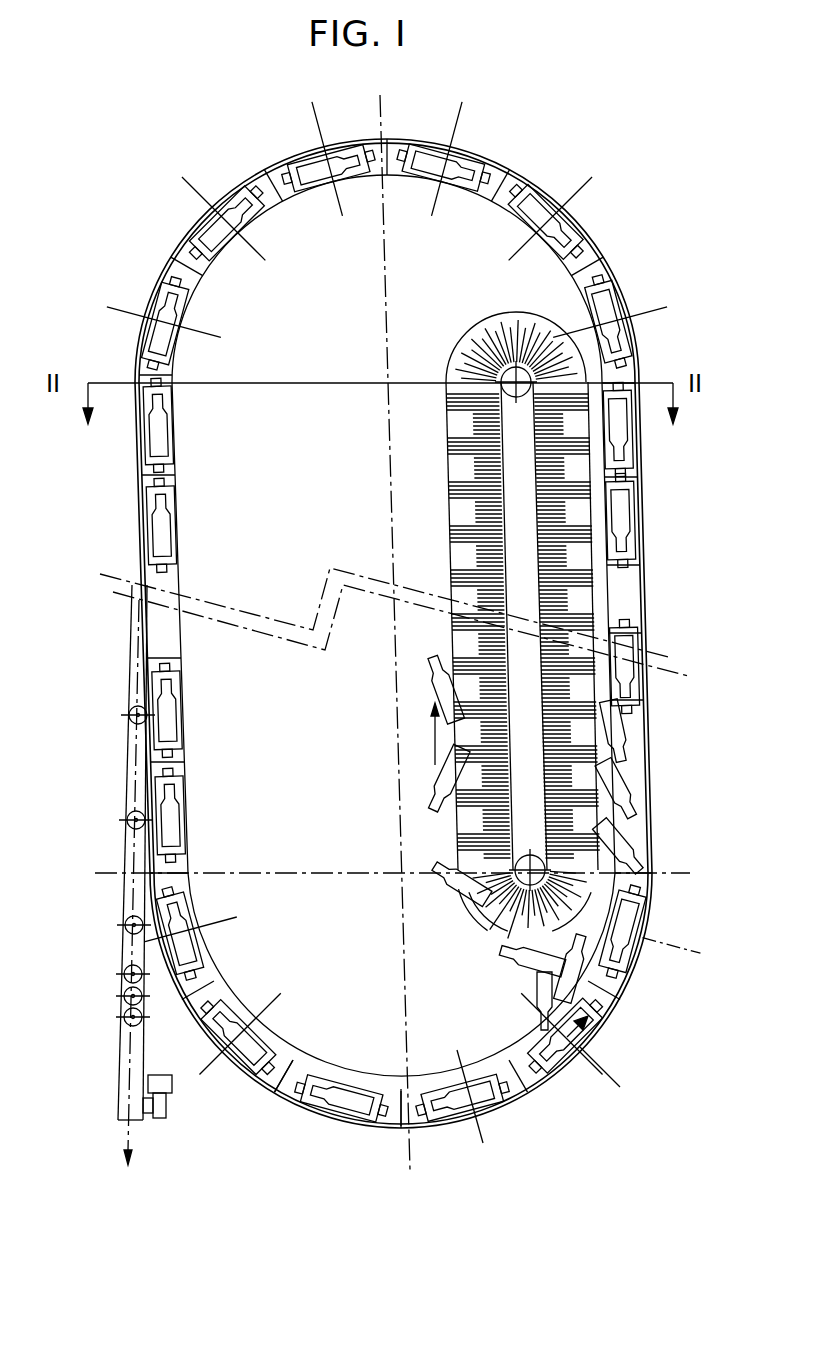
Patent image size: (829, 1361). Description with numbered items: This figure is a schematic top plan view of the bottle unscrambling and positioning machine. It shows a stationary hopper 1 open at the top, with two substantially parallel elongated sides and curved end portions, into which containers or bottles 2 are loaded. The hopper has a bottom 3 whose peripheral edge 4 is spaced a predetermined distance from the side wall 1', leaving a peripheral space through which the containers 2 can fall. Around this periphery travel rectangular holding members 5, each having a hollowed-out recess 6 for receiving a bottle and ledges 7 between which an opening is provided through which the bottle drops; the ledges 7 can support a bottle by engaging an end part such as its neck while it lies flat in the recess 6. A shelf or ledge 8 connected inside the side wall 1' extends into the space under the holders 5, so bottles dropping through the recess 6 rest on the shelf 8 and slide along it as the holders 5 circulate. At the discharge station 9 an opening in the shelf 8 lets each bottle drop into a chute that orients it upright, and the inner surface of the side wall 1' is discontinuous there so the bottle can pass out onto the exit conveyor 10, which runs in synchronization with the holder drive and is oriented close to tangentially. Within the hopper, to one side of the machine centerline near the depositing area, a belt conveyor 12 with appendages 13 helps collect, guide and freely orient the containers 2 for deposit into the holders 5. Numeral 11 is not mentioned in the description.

The hopper 1 is at (325, 291).
The side wall 1' is at (651, 520).
The containers or bottles 2 is at (458, 878).
The bottom 3 is at (300, 1027).
The peripheral edge 4 is at (548, 1088).
The holding member 5 is at (300, 1086).
The recess 6 is at (357, 1040).
The ledges 7 is at (377, 1122).
The shelf or ledge 8 is at (453, 1112).
The discharge station 9 is at (130, 522).
The exit conveyor 10 is at (130, 840).
The conveyor drive 11 is at (176, 1090).
The belt conveyor 12 is at (470, 814).
The appendages 13 is at (447, 522).